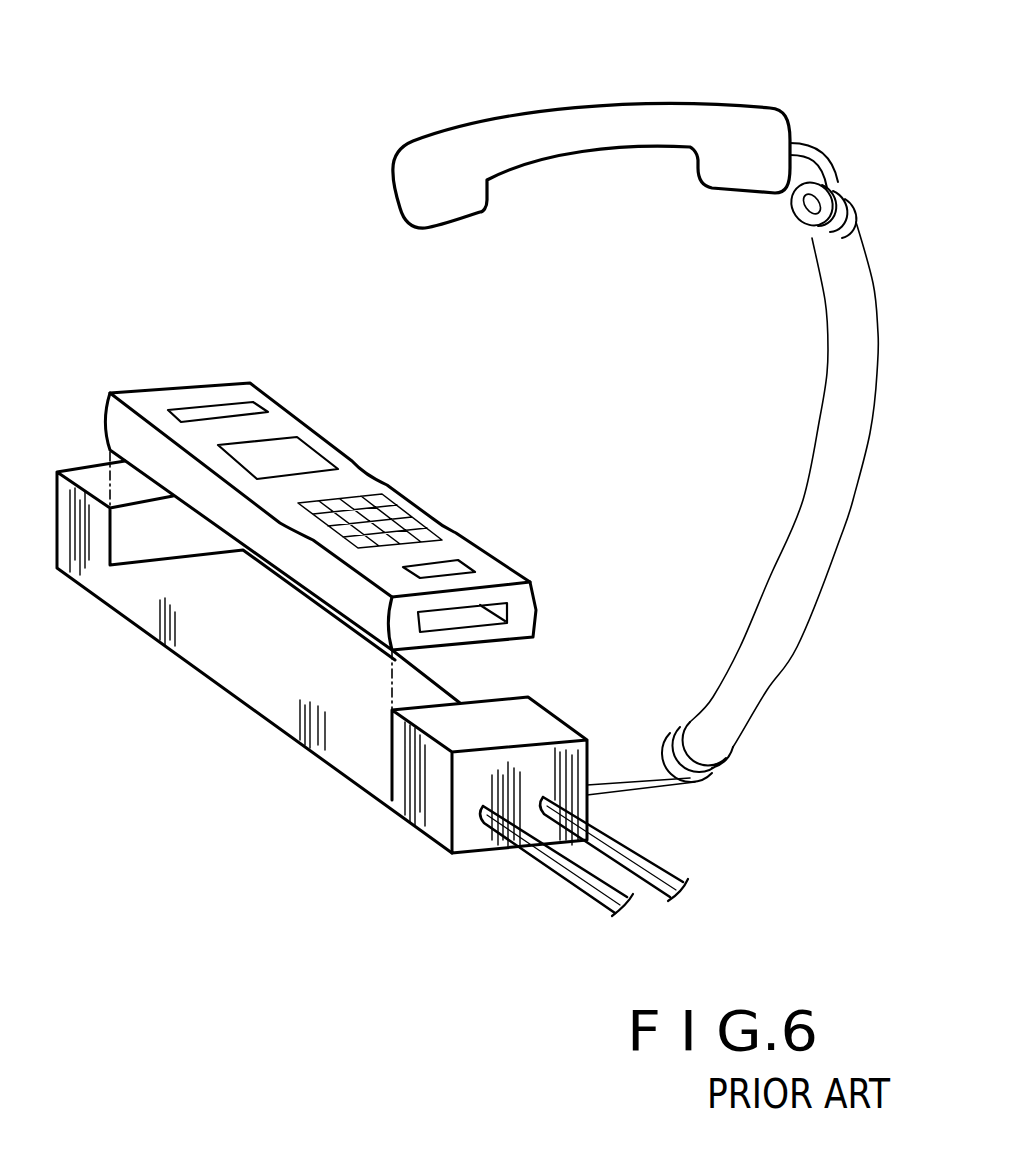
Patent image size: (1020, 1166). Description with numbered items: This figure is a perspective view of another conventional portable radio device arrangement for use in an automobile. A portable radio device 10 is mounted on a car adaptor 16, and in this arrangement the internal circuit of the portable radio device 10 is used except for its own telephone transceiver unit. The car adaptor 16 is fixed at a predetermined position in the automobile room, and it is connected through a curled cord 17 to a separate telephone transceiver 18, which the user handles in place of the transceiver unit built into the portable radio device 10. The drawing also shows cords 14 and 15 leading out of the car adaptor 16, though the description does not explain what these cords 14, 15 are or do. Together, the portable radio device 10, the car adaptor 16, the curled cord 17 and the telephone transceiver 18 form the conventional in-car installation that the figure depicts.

The portable radio device 10 is at (287, 423).
The power cord 14 is at (588, 878).
The telephone line cord 15 is at (640, 862).
The car adaptor 16 is at (265, 708).
The curled cord 17 is at (803, 228).
The telephone transceiver 18 is at (577, 117).